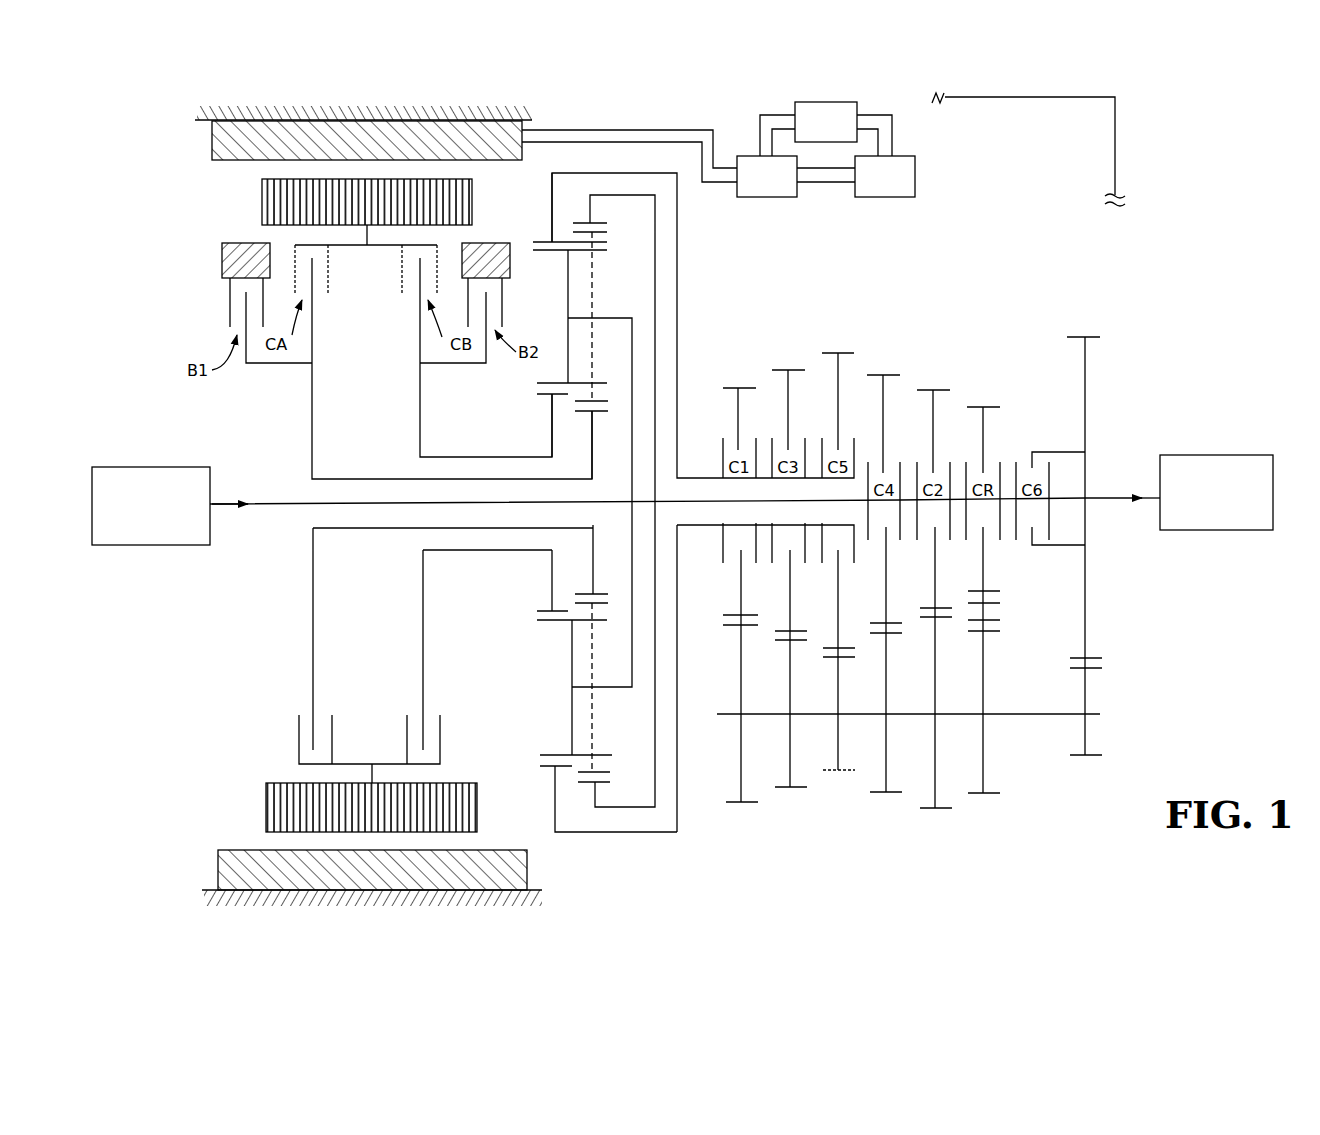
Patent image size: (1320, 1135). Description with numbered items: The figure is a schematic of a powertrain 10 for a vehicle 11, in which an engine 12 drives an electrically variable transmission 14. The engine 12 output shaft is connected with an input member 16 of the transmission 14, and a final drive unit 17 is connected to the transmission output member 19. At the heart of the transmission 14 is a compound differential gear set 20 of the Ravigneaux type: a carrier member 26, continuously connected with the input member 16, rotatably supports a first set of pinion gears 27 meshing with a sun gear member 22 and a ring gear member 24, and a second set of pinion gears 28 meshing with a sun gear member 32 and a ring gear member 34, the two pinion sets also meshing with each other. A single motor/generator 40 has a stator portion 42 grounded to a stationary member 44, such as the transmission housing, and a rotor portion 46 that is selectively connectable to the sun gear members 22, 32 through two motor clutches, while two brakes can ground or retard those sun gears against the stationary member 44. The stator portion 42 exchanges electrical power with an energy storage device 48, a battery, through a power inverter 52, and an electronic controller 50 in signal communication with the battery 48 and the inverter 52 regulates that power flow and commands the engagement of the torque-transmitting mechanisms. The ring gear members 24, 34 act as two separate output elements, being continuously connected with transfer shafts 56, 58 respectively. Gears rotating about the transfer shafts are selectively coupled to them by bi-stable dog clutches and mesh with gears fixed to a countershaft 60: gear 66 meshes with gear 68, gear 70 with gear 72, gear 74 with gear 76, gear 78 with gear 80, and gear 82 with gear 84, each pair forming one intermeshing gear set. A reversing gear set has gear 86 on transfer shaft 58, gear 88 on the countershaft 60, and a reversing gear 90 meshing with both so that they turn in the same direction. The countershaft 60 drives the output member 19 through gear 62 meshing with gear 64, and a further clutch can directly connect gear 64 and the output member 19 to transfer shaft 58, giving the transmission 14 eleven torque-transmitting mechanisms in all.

The powertrain 10 is at (770, 262).
The vehicle 11 is at (1115, 148).
The engine 12 is at (142, 467).
The electrically variable transmission 14 is at (885, 295).
The input member 16 is at (268, 502).
The final drive unit 17 is at (1235, 455).
The output member 19 is at (1105, 497).
The compound differential gear set 20 is at (553, 637).
The sun gear member 22 is at (550, 395).
The ring gear member 24 is at (548, 240).
The carrier member 26 is at (632, 318).
The first set of pinion gears 27 is at (566, 374).
The second set of pinion gears 28 is at (594, 270).
The sun gear member 32 is at (600, 412).
The ring gear member 34 is at (635, 228).
The motor/generator 40 is at (215, 192).
The stator portion 42 is at (212, 140).
The stationary member 44 is at (198, 117).
The rotor portion 46 is at (262, 200).
The energy storage device 48 is at (880, 197).
The electronic controller 50 is at (843, 102).
The power inverter 52 is at (770, 197).
The transfer shaft 56 is at (702, 478).
The transfer shaft 58 is at (712, 524).
The countershaft 60 is at (1025, 715).
The gear 62 is at (1088, 690).
The gear 64 is at (1088, 612).
The gear 66 is at (740, 573).
The gear 68 is at (740, 688).
The gear 70 is at (935, 407).
The gear 72 is at (937, 693).
The gear 74 is at (786, 385).
The gear 76 is at (793, 770).
The gear 78 is at (885, 395).
The gear 80 is at (888, 768).
The gear 82 is at (835, 365).
The gear 84 is at (840, 767).
The gear 86 is at (985, 428).
The gear 88 is at (987, 777).
The reversing gear 90 is at (990, 612).